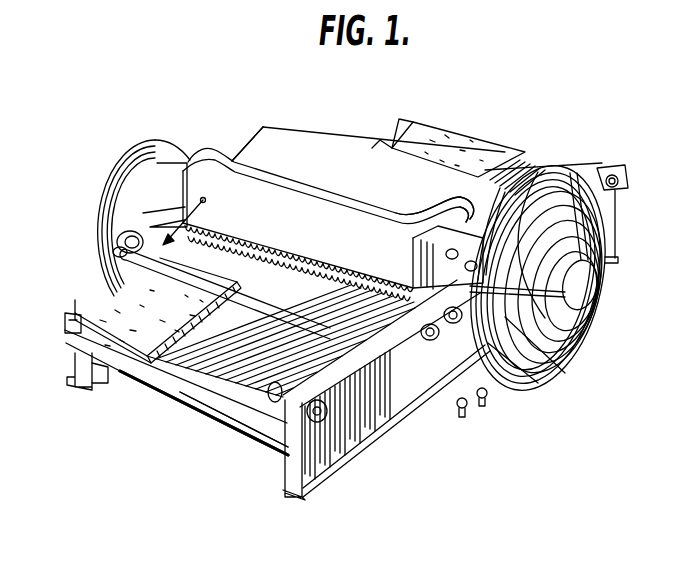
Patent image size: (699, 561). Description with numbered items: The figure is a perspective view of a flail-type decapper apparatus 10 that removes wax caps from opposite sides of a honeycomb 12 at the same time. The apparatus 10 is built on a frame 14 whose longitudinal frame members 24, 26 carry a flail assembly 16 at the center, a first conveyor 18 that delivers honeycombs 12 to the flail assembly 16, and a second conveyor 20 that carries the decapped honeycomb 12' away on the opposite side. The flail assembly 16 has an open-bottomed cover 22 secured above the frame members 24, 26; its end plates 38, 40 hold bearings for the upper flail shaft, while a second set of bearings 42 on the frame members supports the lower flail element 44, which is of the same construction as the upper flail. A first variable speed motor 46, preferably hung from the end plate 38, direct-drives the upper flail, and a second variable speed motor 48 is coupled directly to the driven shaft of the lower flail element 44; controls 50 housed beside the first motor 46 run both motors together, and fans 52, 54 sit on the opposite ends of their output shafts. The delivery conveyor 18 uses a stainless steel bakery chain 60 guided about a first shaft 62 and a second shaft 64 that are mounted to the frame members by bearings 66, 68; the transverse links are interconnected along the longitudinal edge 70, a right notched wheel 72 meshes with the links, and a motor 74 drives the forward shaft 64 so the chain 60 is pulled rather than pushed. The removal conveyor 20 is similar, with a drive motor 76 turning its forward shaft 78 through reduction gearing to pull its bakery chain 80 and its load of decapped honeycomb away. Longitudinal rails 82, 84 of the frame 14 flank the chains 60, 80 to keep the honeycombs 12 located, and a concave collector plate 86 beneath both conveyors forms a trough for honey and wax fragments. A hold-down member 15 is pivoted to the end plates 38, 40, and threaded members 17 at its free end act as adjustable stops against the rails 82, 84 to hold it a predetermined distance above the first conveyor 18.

The flail-type decapper apparatus 10 is at (593, 378).
The honeycomb 12 is at (248, 367).
The decapped honeycomb 12' is at (458, 132).
The frame 14 is at (85, 378).
The hold-down member 15 is at (155, 300).
The flail assembly 16 is at (238, 131).
The threaded members 17 is at (207, 212).
The first conveyor 18 is at (200, 372).
The second conveyor 20 is at (580, 157).
The cover 22 is at (291, 150).
The longitudinal frame member 24 is at (279, 497).
The longitudinal frame member 26 is at (100, 383).
The end plate 38 is at (398, 210).
The end plate 40 is at (262, 128).
The bearings 42 is at (486, 405).
The lower flail element 44 is at (330, 268).
The first variable speed motor 46 is at (544, 163).
The second variable speed motor 48 is at (143, 148).
The controls 50 is at (475, 203).
The fan 52 is at (578, 357).
The fan 54 is at (143, 190).
The bakery chain 60 is at (177, 348).
The first shaft 62 is at (325, 415).
The second shaft 64 is at (450, 325).
The bearings 66 is at (65, 318).
The bearings 68 is at (425, 340).
The longitudinal edge 70 is at (247, 347).
The right notched wheel 72 is at (250, 400).
The motor 74 is at (150, 222).
The drive motor 76 is at (373, 145).
The shaft 78 is at (630, 175).
The bakery chain 80 is at (547, 166).
The longitudinal rail 82 is at (263, 400).
The longitudinal rail 84 is at (93, 297).
The collector plate 86 is at (188, 420).